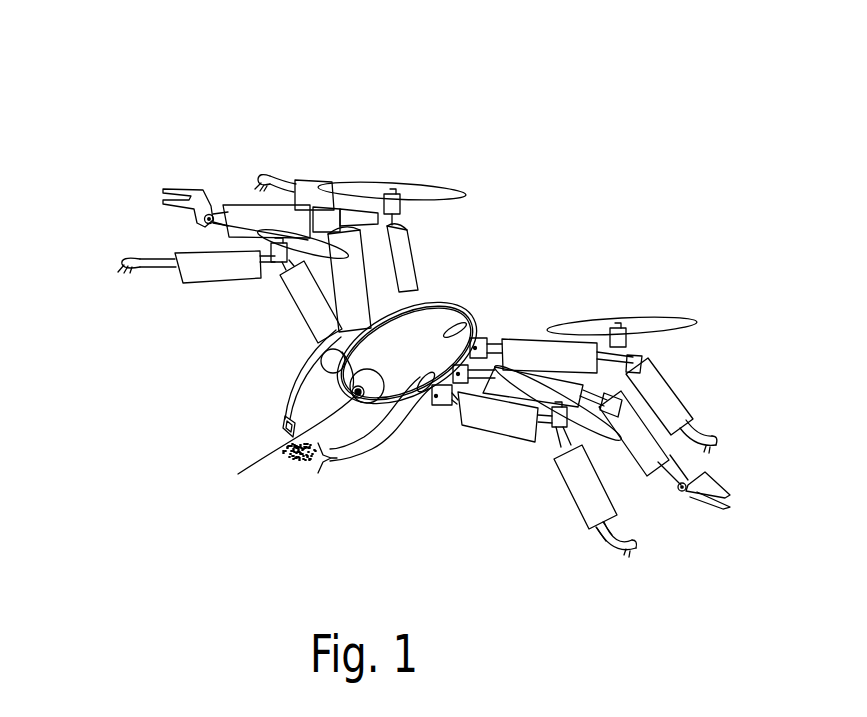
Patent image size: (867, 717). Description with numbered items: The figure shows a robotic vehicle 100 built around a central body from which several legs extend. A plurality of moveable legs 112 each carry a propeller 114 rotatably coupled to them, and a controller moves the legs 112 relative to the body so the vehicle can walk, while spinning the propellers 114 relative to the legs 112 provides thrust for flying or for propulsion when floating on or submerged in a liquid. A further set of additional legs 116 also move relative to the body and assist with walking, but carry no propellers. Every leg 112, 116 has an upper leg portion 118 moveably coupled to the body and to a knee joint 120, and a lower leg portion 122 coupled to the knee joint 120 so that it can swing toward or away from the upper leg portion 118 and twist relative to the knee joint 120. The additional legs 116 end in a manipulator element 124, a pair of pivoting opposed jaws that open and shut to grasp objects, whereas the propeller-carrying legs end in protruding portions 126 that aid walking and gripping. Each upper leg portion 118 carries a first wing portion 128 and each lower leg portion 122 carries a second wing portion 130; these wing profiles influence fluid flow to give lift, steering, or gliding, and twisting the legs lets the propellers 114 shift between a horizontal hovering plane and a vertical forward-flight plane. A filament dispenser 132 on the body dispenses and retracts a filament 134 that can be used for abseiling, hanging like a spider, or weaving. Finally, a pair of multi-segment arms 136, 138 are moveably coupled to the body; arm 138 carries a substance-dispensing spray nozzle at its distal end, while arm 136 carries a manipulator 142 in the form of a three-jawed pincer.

The robotic vehicle 100 is at (494, 92).
The moveable legs 112 is at (406, 252).
The propeller 114 is at (437, 188).
The additional legs 116 is at (368, 292).
The upper leg portion 118 is at (443, 406).
The knee joint 120 is at (570, 438).
The lower leg portion 122 is at (610, 534).
The manipulator element 124 is at (165, 197).
The protruding portions 126 is at (124, 262).
The first wing portion 128 is at (315, 325).
The second wing portion 130 is at (195, 283).
The filament dispenser 132 is at (352, 402).
The filament 134 is at (240, 472).
The arm 136 is at (290, 393).
The arm 138 is at (357, 452).
The manipulator 142 is at (283, 432).